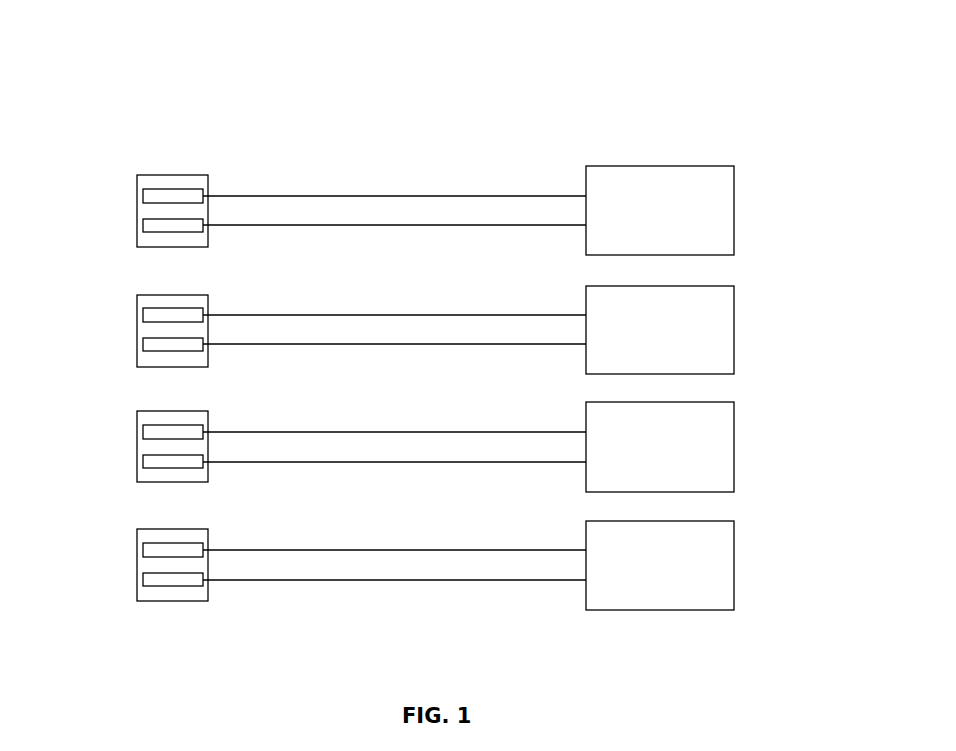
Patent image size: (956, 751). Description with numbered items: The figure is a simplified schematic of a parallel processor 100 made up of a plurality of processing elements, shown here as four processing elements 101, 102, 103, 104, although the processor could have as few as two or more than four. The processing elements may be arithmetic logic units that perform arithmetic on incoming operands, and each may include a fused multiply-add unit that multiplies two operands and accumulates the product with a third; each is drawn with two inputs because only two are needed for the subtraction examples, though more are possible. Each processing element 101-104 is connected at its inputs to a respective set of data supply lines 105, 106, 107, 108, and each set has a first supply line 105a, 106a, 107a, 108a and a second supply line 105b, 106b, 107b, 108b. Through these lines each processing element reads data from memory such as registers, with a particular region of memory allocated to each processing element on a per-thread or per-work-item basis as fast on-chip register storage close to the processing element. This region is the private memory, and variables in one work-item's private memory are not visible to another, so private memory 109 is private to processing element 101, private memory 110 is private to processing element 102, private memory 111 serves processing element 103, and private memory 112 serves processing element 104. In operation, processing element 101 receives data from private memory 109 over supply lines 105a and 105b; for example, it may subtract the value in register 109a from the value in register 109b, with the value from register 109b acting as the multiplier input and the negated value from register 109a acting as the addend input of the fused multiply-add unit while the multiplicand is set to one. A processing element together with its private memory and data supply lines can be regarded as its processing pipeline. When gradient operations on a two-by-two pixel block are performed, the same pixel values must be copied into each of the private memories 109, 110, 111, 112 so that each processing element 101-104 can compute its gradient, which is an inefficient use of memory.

The parallel processor 100 is at (83, 43).
The processing element 101 is at (734, 170).
The processing element 102 is at (734, 288).
The processing element 103 is at (734, 404).
The processing element 104 is at (734, 524).
The set of data supply lines 105 is at (394, 192).
The first supply line 105a is at (545, 196).
The second supply line 105b is at (417, 227).
The set of data supply lines 106 is at (394, 323).
The first supply line 106a is at (546, 314).
The second supply line 106b is at (418, 345).
The set of data supply lines 107 is at (394, 444).
The first supply line 107a is at (546, 432).
The second supply line 107b is at (420, 463).
The set of data supply lines 108 is at (394, 562).
The first supply line 108a is at (547, 550).
The second supply line 108b is at (434, 581).
The private memory 109 is at (137, 216).
The register 109a is at (143, 192).
The register 109b is at (143, 233).
The private memory 110 is at (137, 335).
The private memory 111 is at (137, 449).
The private memory 112 is at (137, 569).